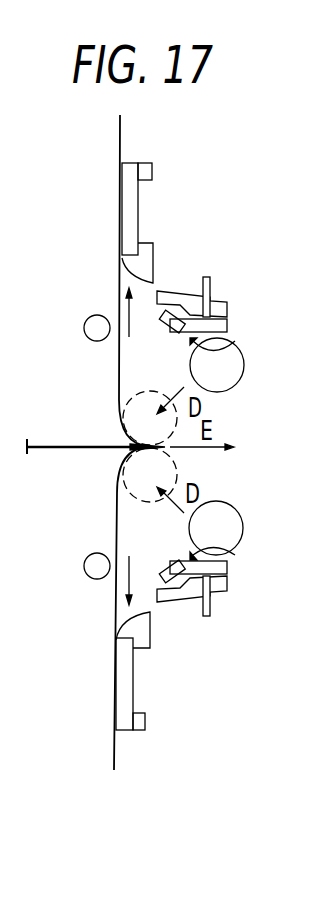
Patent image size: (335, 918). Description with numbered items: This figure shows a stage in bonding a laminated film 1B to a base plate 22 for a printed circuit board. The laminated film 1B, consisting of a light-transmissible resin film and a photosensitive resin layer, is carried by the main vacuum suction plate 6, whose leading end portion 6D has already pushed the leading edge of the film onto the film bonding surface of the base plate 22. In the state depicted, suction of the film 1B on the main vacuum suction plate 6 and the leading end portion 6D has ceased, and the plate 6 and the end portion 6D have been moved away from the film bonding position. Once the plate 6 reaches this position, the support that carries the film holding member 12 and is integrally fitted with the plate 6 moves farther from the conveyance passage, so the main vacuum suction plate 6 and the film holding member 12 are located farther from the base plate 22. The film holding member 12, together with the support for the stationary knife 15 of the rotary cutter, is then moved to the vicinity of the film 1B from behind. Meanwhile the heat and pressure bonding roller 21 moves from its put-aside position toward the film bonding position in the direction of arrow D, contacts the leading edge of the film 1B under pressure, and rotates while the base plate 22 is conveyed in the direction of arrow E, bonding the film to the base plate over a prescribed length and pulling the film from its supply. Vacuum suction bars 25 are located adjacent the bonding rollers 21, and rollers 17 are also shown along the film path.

The laminated film 1B is at (120, 153).
The main vacuum suction plate 6 is at (133, 163).
The leading end portion 6D is at (155, 250).
The film holding member 12 is at (173, 292).
The stationary knife 15 is at (161, 321).
The feed roller 17 is at (88, 317).
The heat and pressure bonding roller 21 is at (232, 382).
The base plate 22 is at (80, 443).
The vacuum suction bar 25 is at (235, 341).